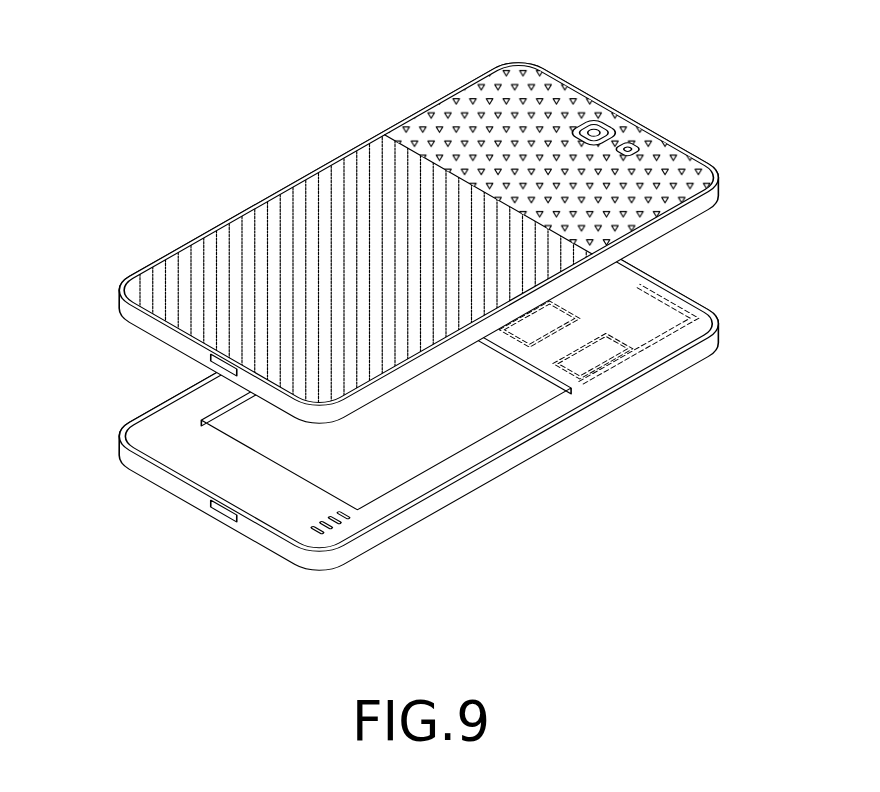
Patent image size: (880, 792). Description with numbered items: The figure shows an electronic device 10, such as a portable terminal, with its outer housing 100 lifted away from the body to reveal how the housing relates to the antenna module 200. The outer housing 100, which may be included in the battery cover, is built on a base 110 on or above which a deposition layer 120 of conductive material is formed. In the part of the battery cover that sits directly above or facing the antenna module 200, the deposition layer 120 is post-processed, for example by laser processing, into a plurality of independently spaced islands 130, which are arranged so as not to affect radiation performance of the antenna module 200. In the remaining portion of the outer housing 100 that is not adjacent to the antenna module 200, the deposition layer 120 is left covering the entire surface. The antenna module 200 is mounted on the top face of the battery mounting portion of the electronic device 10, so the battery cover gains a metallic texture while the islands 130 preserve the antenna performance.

The electronic device 10 is at (737, 84).
The outer housing 100 is at (389, 228).
The base 110 is at (283, 184).
The deposition layer 120 is at (363, 163).
The islands 130 is at (485, 105).
The antenna module 200 is at (633, 354).